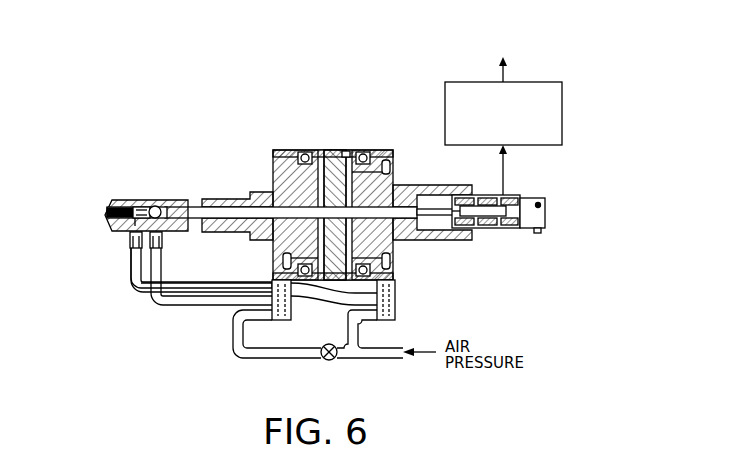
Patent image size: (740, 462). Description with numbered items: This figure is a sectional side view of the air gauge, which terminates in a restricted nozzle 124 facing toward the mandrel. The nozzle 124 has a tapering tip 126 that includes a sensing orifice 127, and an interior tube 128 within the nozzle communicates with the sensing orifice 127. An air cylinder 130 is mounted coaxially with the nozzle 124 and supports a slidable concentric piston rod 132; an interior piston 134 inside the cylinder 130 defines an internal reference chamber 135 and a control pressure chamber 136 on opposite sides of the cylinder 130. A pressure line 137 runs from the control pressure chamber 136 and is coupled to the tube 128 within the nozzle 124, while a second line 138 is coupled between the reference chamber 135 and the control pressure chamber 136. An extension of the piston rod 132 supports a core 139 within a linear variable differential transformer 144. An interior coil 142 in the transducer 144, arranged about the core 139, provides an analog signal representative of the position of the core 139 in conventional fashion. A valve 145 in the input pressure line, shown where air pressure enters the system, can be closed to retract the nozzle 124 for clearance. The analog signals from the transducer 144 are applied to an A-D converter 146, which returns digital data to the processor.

The restricted nozzle 124 is at (150, 200).
The tapering tip 126 is at (113, 206).
The sensing orifice 127 is at (108, 212).
The interior tube 128 is at (133, 207).
The air cylinder 130 is at (323, 150).
The piston rod 132 is at (252, 199).
The interior piston 134 is at (362, 152).
The internal reference chamber 135 is at (347, 152).
The control pressure chamber 136 is at (318, 151).
The pressure line 137 is at (190, 298).
The second line 138 is at (143, 290).
The core 139 is at (508, 210).
The interior coil 142 is at (492, 226).
The linear variable differential transformer 144 is at (524, 193).
The valve 145 is at (332, 360).
The A-D converter 146 is at (562, 112).